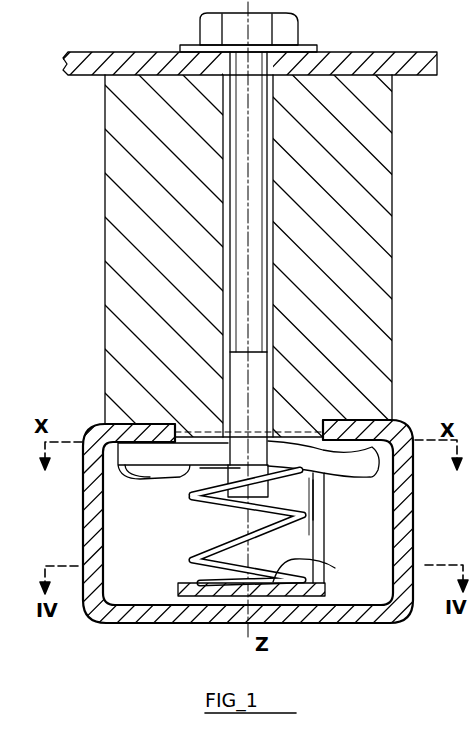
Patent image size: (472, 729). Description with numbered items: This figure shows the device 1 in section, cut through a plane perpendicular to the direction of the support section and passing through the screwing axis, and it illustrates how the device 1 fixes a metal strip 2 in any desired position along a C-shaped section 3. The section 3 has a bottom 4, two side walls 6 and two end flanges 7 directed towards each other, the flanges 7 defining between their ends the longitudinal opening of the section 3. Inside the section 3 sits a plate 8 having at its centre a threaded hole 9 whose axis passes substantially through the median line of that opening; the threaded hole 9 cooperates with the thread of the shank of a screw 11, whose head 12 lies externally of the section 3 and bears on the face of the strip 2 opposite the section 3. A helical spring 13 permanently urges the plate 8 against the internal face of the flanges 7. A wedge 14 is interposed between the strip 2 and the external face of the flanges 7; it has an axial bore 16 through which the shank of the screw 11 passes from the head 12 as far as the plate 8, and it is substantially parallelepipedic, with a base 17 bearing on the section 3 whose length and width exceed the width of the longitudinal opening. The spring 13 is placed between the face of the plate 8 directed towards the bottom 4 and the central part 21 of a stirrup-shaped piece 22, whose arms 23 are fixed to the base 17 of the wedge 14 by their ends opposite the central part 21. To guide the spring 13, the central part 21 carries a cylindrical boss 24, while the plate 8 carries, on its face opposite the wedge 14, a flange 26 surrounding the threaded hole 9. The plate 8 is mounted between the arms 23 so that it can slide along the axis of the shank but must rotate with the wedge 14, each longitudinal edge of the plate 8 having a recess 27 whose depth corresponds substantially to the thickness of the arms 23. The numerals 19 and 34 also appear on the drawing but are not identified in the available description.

The device 1 is at (92, 285).
The metal strip 2 is at (95, 62).
The C-shaped section 3 is at (80, 517).
The bottom 4 is at (285, 625).
The side walls 6 is at (83, 548).
The end flanges 7 is at (130, 424).
The plate 8 is at (84, 495).
The threaded hole 9 is at (220, 462).
The screw 11 is at (238, 198).
The head 12 is at (300, 28).
The spring 13 is at (185, 565).
The wedge 14 is at (367, 214).
The axial bore 16 is at (278, 153).
The base 17 is at (368, 440).
The block side face 19 is at (471, 296).
The central part 21 is at (225, 590).
The stirrup-shaped piece 22 is at (348, 538).
The arms 23 is at (330, 490).
The cylindrical boss 24 is at (300, 558).
The flange 26 is at (205, 477).
The recess 27 is at (178, 425).
The block side face 34 is at (465, 359).